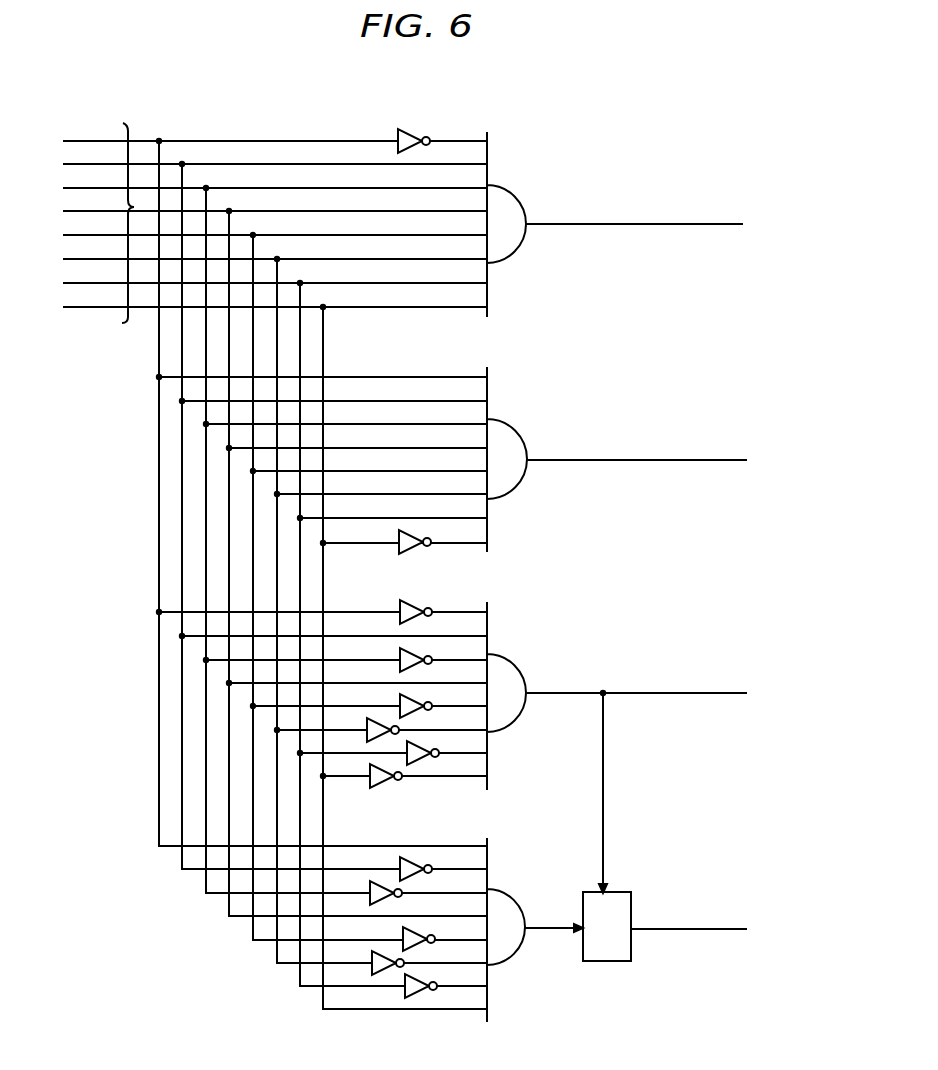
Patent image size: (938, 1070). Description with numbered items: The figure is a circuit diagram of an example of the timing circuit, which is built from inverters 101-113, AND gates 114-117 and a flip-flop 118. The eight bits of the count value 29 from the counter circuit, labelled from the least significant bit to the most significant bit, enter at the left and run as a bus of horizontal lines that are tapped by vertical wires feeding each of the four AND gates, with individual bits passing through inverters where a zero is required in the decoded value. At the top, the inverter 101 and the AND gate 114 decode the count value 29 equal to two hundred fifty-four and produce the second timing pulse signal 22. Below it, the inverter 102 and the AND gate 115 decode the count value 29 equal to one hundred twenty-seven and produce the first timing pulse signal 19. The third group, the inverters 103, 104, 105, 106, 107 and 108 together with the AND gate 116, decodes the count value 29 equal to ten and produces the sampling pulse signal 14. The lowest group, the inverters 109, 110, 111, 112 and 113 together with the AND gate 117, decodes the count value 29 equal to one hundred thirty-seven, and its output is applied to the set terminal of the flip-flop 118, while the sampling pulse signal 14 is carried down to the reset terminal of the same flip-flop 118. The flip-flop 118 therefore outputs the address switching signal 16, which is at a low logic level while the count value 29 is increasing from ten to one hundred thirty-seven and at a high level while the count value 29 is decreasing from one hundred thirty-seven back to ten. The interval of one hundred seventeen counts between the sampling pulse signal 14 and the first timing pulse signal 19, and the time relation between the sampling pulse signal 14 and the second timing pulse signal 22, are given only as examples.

The count value 29 is at (130, 126).
The inverter 101 is at (407, 128).
The inverter 102 is at (405, 552).
The inverter 103 is at (408, 600).
The inverter 104 is at (415, 653).
The inverter 105 is at (420, 698).
The inverter 106 is at (378, 717).
The inverter 107 is at (421, 746).
The inverter 108 is at (384, 788).
The inverter 109 is at (404, 856).
The inverter 110 is at (380, 881).
The inverter 111 is at (418, 930).
The inverter 112 is at (379, 951).
The inverter 113 is at (420, 977).
The AND gate 114 is at (506, 188).
The AND gate 115 is at (512, 433).
The AND gate 116 is at (513, 668).
The AND gate 117 is at (513, 900).
The flip-flop 118 is at (633, 898).
The second timing pulse signal 22 is at (645, 222).
The first timing pulse signal 19 is at (627, 459).
The sampling pulse signal 14 is at (682, 695).
The address switching signal 16 is at (708, 930).